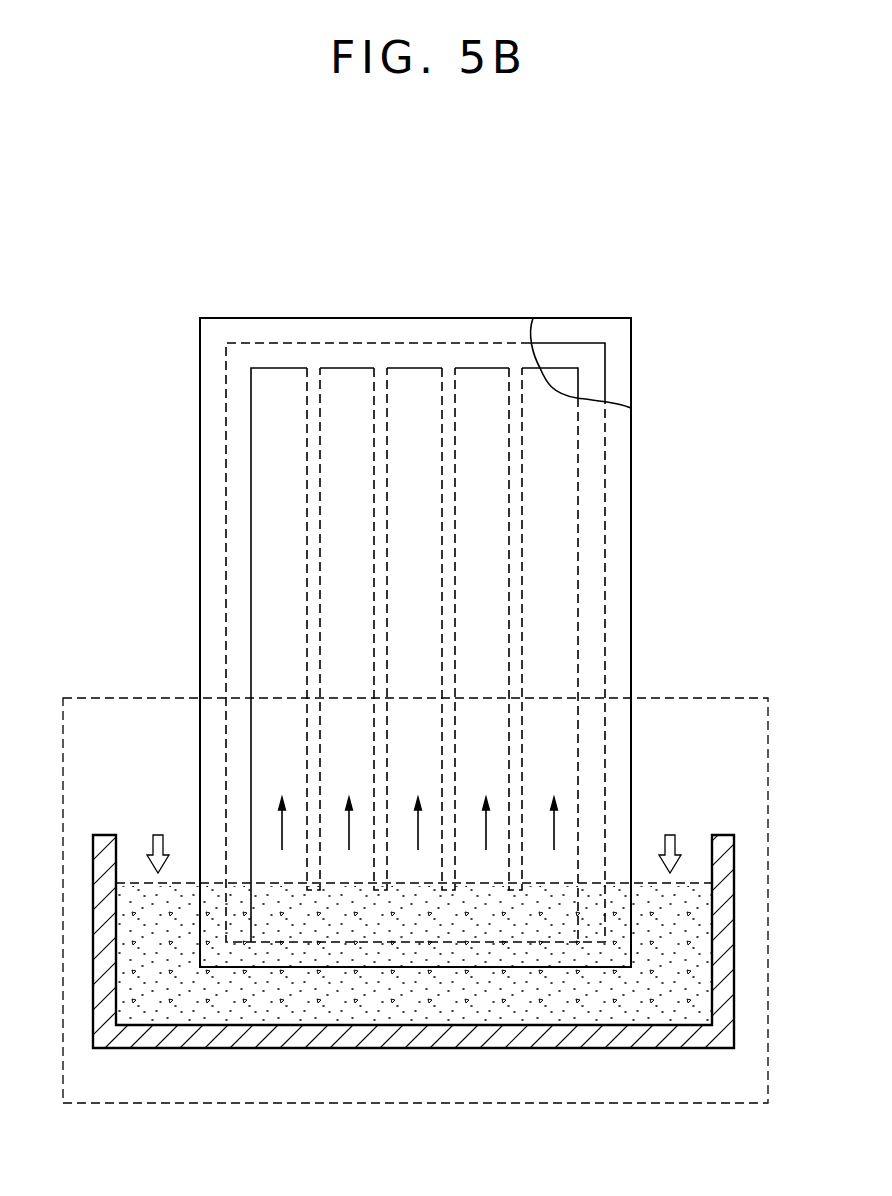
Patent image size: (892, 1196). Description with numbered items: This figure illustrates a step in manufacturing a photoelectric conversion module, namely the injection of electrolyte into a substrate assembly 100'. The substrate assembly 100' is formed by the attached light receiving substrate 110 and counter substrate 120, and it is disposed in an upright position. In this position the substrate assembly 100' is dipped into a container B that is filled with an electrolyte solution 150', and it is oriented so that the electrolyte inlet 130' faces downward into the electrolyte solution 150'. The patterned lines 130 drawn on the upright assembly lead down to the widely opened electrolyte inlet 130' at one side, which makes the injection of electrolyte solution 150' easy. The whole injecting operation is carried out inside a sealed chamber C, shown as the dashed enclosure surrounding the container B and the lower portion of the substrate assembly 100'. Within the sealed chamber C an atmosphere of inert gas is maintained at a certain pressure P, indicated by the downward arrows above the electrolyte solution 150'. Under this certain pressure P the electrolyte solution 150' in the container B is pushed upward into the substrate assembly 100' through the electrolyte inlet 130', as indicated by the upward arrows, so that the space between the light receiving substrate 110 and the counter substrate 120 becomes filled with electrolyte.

The substrate assembly 100' is at (461, 592).
The light receiving substrate 110 is at (471, 330).
The counter substrate 120 is at (625, 350).
The electrode pattern 130 is at (419, 600).
The electrolyte inlet 130' is at (418, 976).
The electrolyte solution 150' is at (475, 953).
The container B is at (730, 984).
The sealed chamber C is at (710, 698).
The pressure P is at (414, 838).